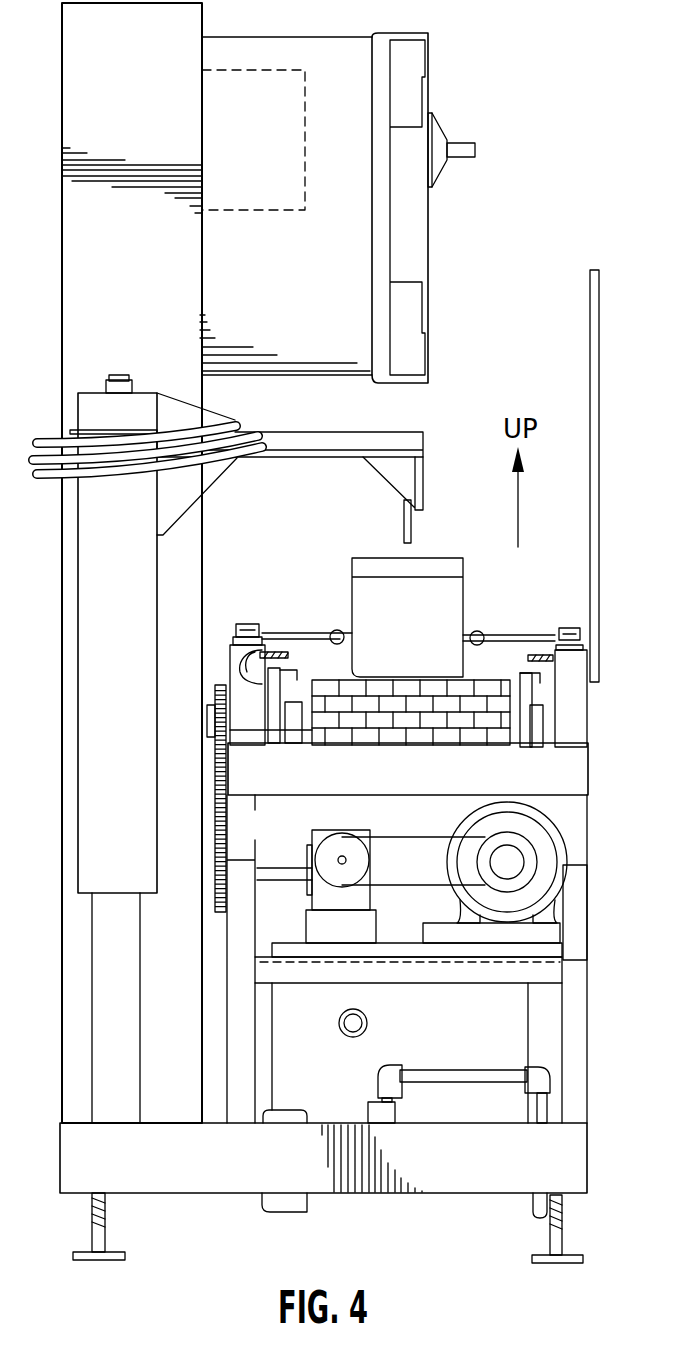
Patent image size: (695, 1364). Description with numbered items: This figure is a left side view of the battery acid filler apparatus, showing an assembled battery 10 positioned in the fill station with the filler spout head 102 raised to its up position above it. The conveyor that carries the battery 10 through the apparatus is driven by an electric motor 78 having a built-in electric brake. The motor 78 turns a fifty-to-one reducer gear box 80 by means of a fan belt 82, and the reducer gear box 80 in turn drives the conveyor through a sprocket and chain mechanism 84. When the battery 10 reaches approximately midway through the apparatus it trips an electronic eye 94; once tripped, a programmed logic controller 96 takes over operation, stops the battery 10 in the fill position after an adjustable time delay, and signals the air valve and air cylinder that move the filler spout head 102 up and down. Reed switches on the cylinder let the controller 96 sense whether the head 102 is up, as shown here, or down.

The battery 10 is at (421, 641).
The electric motor 78 is at (552, 857).
The reducer gear box 80 is at (307, 897).
The fan belt 82 is at (405, 836).
The sprocket and chain mechanism 84 is at (200, 776).
The electronic eye 94 is at (224, 655).
The programmed logic controller 96 is at (287, 53).
The filler spout head 102 is at (442, 441).